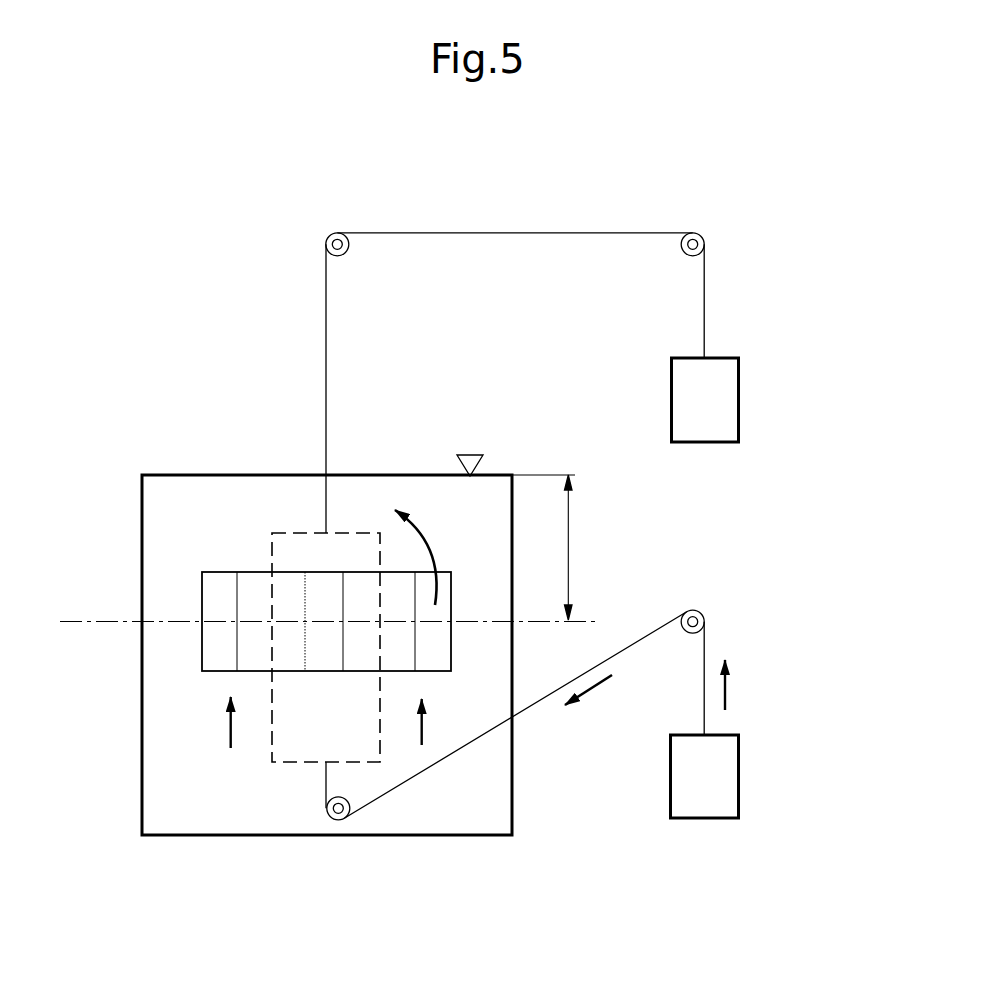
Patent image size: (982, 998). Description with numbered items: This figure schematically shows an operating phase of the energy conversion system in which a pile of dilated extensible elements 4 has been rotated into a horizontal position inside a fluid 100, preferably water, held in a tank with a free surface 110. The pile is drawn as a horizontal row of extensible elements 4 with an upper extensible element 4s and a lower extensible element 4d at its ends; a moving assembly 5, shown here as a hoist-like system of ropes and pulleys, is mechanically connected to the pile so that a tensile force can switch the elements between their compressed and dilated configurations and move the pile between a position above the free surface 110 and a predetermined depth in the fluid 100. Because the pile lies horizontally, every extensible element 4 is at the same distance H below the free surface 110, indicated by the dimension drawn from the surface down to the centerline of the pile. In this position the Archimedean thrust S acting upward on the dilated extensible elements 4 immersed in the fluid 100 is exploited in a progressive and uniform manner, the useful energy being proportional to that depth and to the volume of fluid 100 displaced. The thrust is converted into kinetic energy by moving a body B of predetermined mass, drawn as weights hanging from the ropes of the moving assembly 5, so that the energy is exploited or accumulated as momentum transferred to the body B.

The moving assembly 5 is at (290, 303).
The extensible elements 4 is at (220, 565).
The upper extensible element 4s is at (296, 523).
The lower extensible element 4d is at (458, 645).
The fluid 100 is at (432, 502).
The free surface 110 is at (470, 455).
The body B is at (745, 402).
The depth H is at (568, 552).
The Archimedean thrust S is at (230, 735).